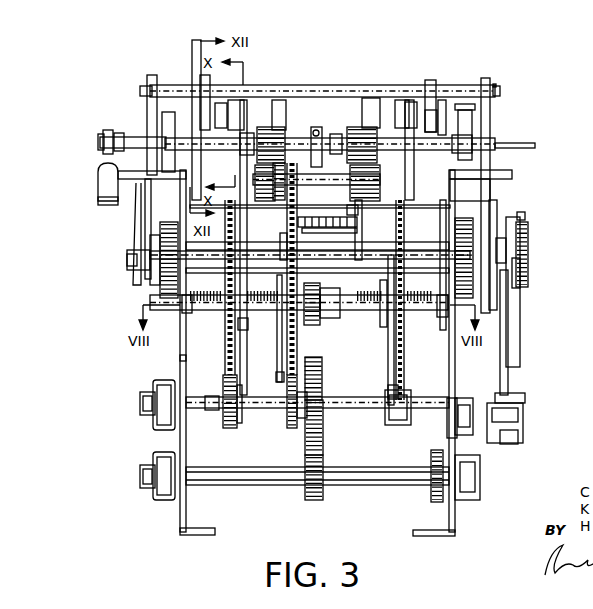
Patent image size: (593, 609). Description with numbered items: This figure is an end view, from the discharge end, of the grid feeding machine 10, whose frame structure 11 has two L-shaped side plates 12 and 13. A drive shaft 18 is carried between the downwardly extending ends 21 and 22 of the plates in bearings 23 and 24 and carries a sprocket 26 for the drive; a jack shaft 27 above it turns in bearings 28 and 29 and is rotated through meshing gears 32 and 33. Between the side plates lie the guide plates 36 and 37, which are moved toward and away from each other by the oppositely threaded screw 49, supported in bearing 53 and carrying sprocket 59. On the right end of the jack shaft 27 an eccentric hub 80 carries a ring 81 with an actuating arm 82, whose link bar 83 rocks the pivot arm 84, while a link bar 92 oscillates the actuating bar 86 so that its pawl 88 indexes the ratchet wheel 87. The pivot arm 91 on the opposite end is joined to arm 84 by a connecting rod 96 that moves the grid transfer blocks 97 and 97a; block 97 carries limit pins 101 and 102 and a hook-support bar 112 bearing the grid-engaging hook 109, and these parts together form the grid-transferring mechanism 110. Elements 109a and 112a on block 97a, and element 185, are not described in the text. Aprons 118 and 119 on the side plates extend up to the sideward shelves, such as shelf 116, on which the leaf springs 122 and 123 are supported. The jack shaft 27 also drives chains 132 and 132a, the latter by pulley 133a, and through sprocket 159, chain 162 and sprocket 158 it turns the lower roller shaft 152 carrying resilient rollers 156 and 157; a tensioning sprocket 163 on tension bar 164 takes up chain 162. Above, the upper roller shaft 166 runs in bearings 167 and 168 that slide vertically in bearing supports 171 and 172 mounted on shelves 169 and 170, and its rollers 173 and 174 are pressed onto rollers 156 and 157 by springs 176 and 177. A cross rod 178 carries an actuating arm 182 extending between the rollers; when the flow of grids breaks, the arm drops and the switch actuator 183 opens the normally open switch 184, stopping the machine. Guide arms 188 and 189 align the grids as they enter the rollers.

The grid feeding machine 10 is at (84, 362).
The frame structure 11 is at (460, 541).
The side plate 12 is at (455, 517).
The side plate 13 is at (180, 521).
The drive shaft 18 is at (232, 484).
The rearward downwardly extending end 21 is at (449, 433).
The rearward downwardly extending end 22 is at (180, 354).
The bearing 23 is at (475, 497).
The bearing 24 is at (155, 495).
The sprocket 26 is at (432, 480).
The jack shaft 27 is at (202, 410).
The bearing 28 is at (472, 428).
The bearing 29 is at (155, 428).
The gear 32 is at (326, 500).
The gear 33 is at (323, 425).
The guide plate 36 is at (395, 330).
The guide plate 37 is at (240, 325).
The screw 49 is at (352, 300).
The bearing 53 is at (188, 295).
The sprocket 59 is at (318, 325).
The eccentric hub 80 is at (525, 394).
The ring 81 is at (512, 429).
The actuating arm 82 is at (508, 375).
The link bar 83 is at (497, 305).
The pivot arm 84 is at (490, 105).
The actuating bar 86 is at (528, 279).
The ratchet wheel 87 is at (528, 258).
The pawl 88 is at (528, 239).
The pivot arm 91 is at (150, 97).
The link bar 92 is at (520, 340).
The connecting rod 96 is at (340, 88).
The grid transfer block 97 is at (236, 105).
The grid transfer block 97a is at (432, 112).
The limit pin 101 is at (442, 115).
The limit pin 102 is at (196, 77).
The grid-engaging hook 109 is at (280, 112).
The collar 109a is at (402, 100).
The grid-transferring mechanism 110 is at (522, 82).
The hook-support bar 112 is at (228, 108).
The collar 112a is at (410, 104).
The shelf 116 is at (500, 146).
The apron 118 is at (525, 237).
The apron 119 is at (128, 247).
The leaf spring 122 is at (370, 100).
The leaf spring 123 is at (255, 116).
The chain 132 is at (230, 430).
The chain 132a is at (395, 425).
The pulley 133a is at (392, 392).
The lower roller shaft 152 is at (338, 195).
The roller 156 is at (368, 201).
The roller 157 is at (260, 201).
The sprocket 158 is at (311, 179).
The sprocket 159 is at (297, 428).
The chain 162 is at (250, 424).
The tensioning sprocket 163 is at (278, 375).
The tension bar 164 is at (265, 330).
The upper roller shaft 166 is at (330, 140).
The bearing 167 is at (470, 143).
The bearing 168 is at (170, 112).
The shelf 169 is at (492, 182).
The shelf 170 is at (127, 209).
The bearing support 171 is at (506, 170).
The bearing support 172 is at (135, 171).
The roller 173 is at (362, 130).
The roller 174 is at (268, 134).
The spring 176 is at (472, 118).
The spring 177 is at (152, 98).
The cross rod 178 is at (118, 135).
The actuating arm 182 is at (316, 127).
The switch actuator 183 is at (98, 143).
The switch 184 is at (106, 163).
The plate 185 is at (104, 201).
The guide arm 188 is at (455, 232).
The guide arm 189 is at (140, 223).